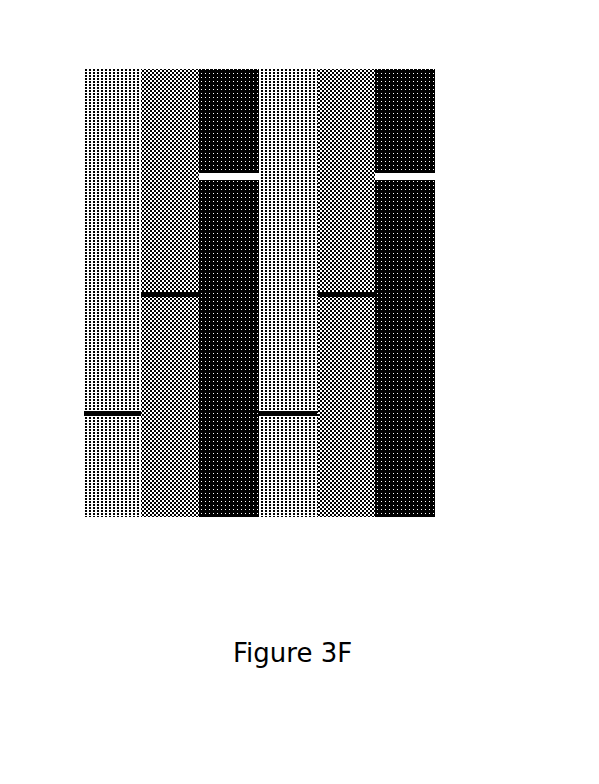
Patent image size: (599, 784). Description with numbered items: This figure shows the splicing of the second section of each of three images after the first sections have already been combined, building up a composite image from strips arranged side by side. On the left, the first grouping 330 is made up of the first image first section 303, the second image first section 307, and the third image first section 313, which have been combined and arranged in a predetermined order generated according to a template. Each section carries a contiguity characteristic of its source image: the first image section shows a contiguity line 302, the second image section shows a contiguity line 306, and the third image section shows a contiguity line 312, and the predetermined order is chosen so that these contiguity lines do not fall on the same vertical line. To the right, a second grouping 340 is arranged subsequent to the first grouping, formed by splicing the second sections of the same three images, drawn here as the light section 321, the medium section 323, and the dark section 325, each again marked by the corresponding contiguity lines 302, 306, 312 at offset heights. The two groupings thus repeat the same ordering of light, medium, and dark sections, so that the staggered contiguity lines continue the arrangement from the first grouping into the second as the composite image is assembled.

The first image first section 303 is at (104, 85).
The second image first section 307 is at (180, 68).
The third image first section 313 is at (232, 68).
The second gate electrode layer 321 is at (295, 80).
The second dielectric layer 323 is at (357, 68).
The second conductive layer 325 is at (417, 68).
The contiguity line 312 is at (261, 176).
The contiguity line 306 is at (318, 300).
The contiguity line 302 is at (297, 418).
The first stack 330 is at (255, 525).
The second stack 340 is at (433, 525).